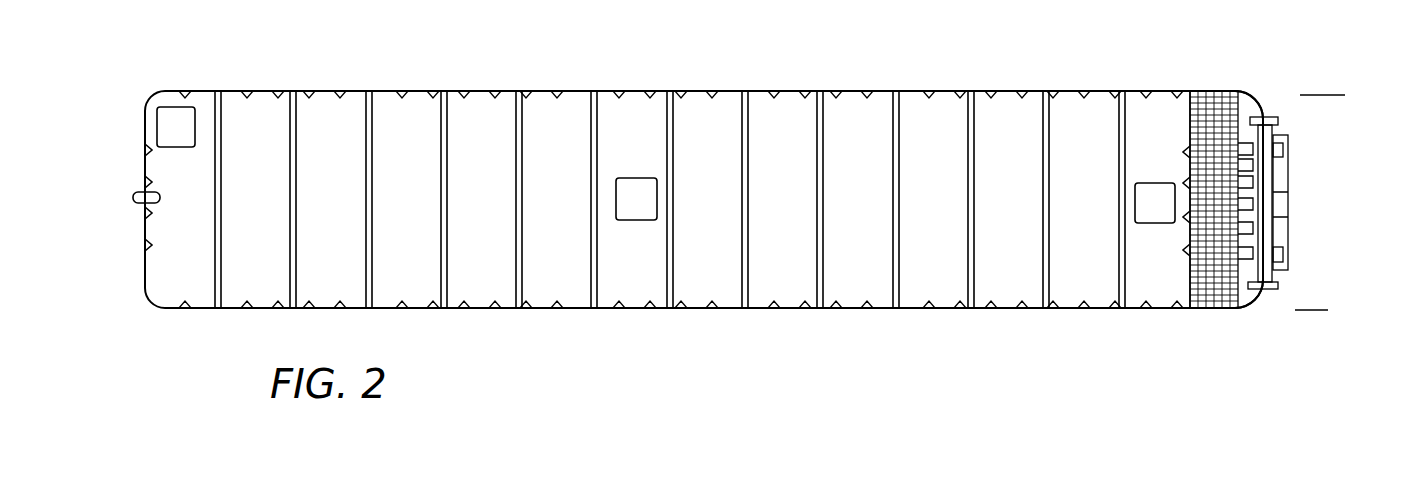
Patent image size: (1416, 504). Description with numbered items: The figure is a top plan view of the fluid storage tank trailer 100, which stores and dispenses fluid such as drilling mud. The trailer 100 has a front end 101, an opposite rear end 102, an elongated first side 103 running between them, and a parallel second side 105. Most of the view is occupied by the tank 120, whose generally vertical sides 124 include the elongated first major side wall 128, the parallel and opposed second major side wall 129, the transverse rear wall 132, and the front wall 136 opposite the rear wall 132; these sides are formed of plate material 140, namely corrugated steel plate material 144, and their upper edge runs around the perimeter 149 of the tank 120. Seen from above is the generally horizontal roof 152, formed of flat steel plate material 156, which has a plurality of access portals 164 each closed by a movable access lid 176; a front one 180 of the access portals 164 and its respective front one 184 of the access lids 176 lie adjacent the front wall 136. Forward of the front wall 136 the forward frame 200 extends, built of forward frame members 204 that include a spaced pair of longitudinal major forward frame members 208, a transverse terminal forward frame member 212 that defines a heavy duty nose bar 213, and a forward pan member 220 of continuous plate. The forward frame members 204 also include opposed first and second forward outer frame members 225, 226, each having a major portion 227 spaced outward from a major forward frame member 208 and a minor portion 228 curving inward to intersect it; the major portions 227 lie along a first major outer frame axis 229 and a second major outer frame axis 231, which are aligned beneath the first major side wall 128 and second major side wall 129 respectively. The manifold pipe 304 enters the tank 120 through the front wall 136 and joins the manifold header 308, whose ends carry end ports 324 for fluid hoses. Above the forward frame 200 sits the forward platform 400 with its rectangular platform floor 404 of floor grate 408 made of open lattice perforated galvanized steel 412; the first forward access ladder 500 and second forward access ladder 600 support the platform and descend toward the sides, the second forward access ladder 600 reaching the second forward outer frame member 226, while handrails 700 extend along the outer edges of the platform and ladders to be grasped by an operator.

The fluid storage tank trailer 100 is at (648, 381).
The front end 101 is at (1326, 236).
The rear end 102 is at (143, 227).
The first side 103 is at (480, 313).
The second side 105 is at (477, 85).
The tank 120 is at (758, 300).
The sides 124 is at (540, 82).
The first major side wall 128 is at (990, 313).
The second major side wall 129 is at (915, 90).
The rear wall 132 is at (143, 182).
The front wall 136 is at (1131, 179).
The plate material 140 is at (670, 171).
The steel plate material 144 is at (777, 90).
The perimeter 149 is at (1008, 90).
The roof 152 is at (1074, 328).
The plate material 156 is at (1073, 295).
The access portals 164 is at (632, 236).
The access lids 176 is at (632, 208).
The front access portal 180 is at (1117, 178).
The front access lid 184 is at (1140, 203).
The forward frame 200 is at (1338, 197).
The forward frame members 204 is at (1338, 267).
The major forward frame members 208 is at (1290, 258).
The terminal forward frame member 212 is at (1336, 201).
The nose bar 213 is at (1292, 235).
The forward pan member 220 is at (1223, 312).
The first forward outer frame member 225 is at (1242, 312).
The second forward outer frame member 226 is at (1289, 83).
The major portion 227 is at (1217, 83).
The minor portion 228 is at (1268, 100).
The first major outer frame axis 229 is at (1328, 310).
The second major outer frame axis 231 is at (1345, 95).
The manifold pipe 304 is at (1253, 203).
The manifold header 308 is at (1306, 323).
The end ports 324 is at (1265, 303).
The forward platform 400 is at (1208, 228).
The platform floor 404 is at (1131, 211).
The floor grate 408 is at (1127, 215).
The open lattice perforated galvanized steel 412 is at (1195, 223).
The first forward access ladder 500 is at (1213, 312).
The second forward access ladder 600 is at (1184, 213).
The handrails 700 is at (1243, 175).